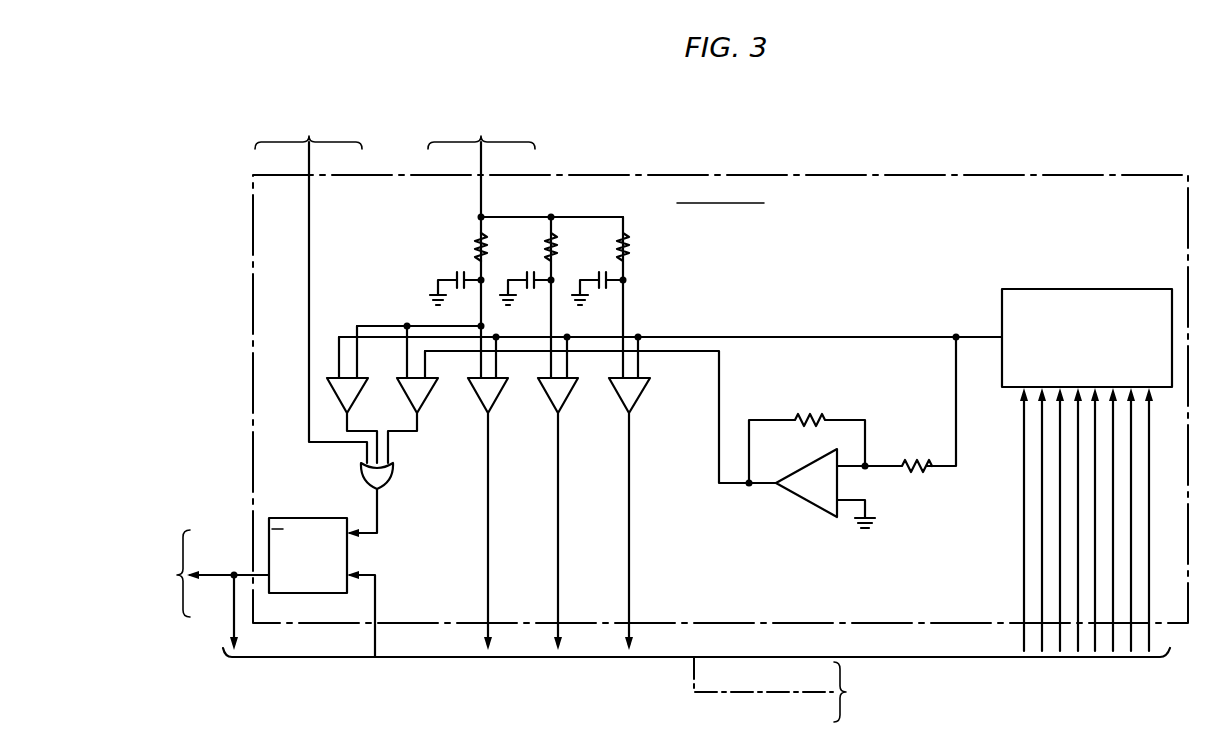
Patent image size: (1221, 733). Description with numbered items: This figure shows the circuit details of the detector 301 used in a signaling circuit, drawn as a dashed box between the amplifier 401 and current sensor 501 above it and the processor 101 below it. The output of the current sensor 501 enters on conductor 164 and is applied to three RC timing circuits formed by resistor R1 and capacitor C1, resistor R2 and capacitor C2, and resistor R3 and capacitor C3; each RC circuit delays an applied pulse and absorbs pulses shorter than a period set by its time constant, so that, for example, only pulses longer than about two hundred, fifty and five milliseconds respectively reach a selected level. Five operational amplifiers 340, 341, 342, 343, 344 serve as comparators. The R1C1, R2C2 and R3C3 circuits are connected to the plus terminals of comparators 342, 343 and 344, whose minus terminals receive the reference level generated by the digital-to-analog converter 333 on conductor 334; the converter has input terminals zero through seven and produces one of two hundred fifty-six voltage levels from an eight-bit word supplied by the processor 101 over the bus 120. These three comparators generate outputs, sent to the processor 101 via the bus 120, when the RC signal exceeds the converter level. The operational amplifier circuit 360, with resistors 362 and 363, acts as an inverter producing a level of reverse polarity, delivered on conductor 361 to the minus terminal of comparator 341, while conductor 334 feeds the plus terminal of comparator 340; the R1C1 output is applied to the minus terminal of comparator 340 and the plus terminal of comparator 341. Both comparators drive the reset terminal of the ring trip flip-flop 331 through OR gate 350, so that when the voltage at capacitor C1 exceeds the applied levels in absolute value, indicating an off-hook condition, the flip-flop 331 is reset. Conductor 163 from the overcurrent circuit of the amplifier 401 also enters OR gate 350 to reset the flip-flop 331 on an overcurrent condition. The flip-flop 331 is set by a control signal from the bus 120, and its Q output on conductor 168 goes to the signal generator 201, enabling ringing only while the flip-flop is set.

The processor 101 is at (696, 685).
The bus 120 is at (733, 694).
The conductor 163 is at (310, 158).
The conductor 164 is at (482, 158).
The conductor 168 is at (210, 572).
The signal generator 201 is at (129, 573).
The detector 301 is at (717, 174).
The ring trip flip-flop 331 is at (313, 498).
The digital-to-analog converter 333 is at (1089, 268).
The conductor 334 is at (973, 335).
The comparator 340 is at (359, 397).
The comparator 341 is at (429, 397).
The comparator 342 is at (499, 397).
The comparator 343 is at (569, 397).
The comparator 344 is at (641, 397).
The OR gate 350 is at (393, 470).
The operational amplifier circuit 360 is at (806, 502).
The conductor 361 is at (740, 485).
The resistor 362 is at (914, 463).
The resistor 363 is at (809, 417).
The amplifier 401 is at (308, 119).
The current sensor 501 is at (481, 105).
The resistor R1 is at (549, 238).
The resistor R2 is at (561, 297).
The resistor R3 is at (633, 297).
The capacitor C1 is at (457, 279).
The capacitor C2 is at (527, 279).
The capacitor C3 is at (599, 279).